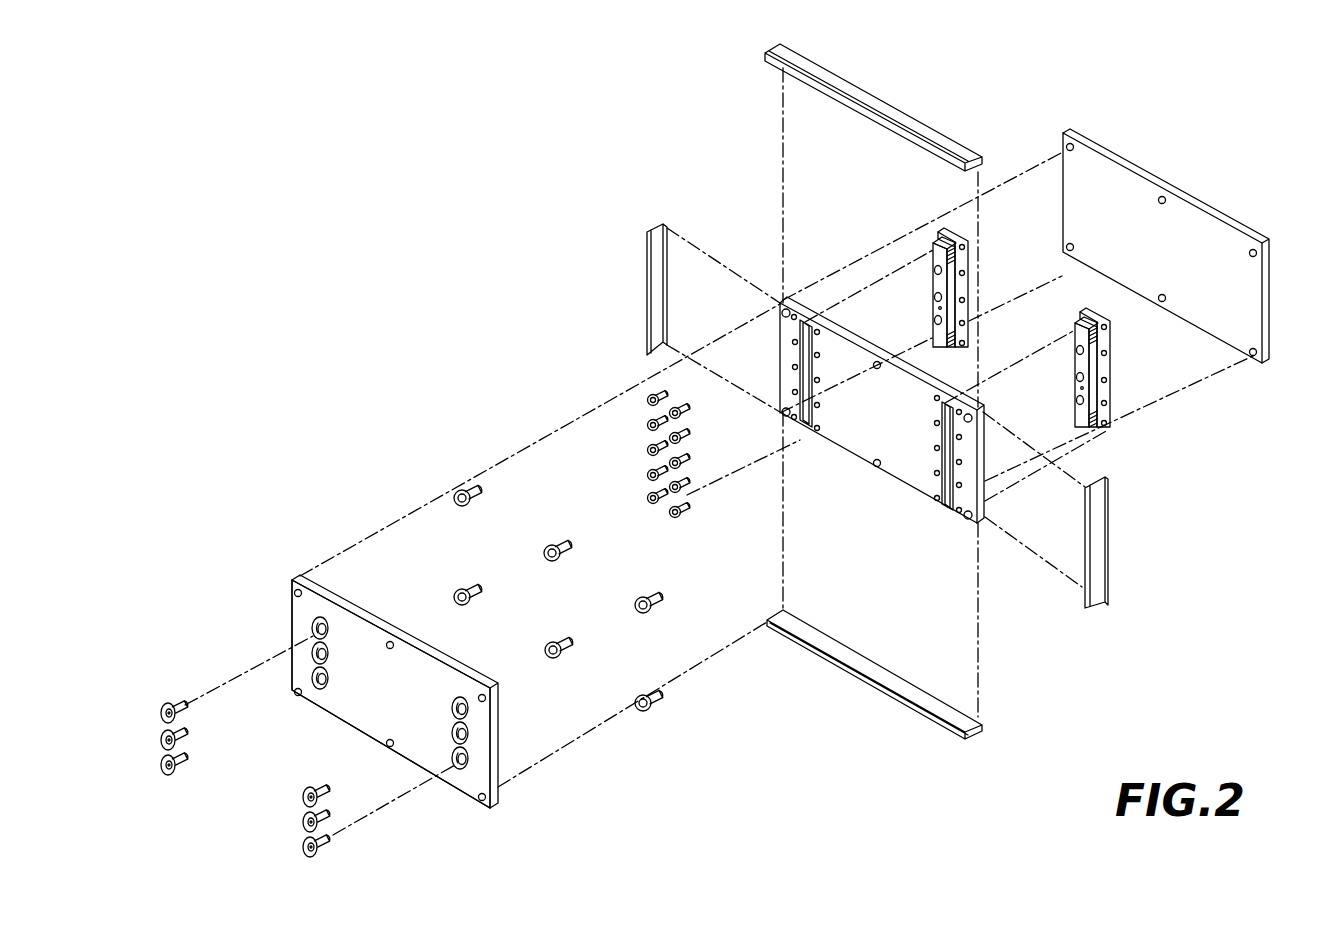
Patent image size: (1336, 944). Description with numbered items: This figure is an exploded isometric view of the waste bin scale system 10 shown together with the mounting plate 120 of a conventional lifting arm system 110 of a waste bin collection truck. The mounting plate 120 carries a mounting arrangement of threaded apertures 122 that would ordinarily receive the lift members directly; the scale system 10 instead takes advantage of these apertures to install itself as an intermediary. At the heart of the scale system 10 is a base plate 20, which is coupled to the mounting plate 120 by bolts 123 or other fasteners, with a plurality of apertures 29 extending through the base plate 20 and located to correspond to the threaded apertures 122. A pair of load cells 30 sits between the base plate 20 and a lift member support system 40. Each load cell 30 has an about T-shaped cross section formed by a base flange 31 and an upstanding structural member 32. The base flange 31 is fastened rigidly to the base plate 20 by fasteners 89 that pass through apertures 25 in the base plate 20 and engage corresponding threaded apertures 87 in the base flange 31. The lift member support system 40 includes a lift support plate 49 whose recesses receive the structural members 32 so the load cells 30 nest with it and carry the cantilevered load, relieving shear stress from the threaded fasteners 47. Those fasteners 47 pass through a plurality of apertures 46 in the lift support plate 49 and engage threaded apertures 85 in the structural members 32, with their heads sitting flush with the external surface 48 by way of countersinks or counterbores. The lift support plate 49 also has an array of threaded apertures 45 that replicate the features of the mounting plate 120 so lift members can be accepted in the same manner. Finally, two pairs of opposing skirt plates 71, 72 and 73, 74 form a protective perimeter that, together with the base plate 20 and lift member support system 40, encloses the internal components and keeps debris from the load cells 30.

The waste bin scale system 10 is at (361, 230).
The base plate 20 is at (854, 408).
The apertures 25 is at (792, 392).
The apertures 29 is at (783, 311).
The load cell 30 is at (1029, 331).
The base flange 31 is at (969, 260).
The structural member 32 is at (934, 280).
The lift member support system 40 is at (365, 688).
The threaded apertures 45 is at (295, 591).
The apertures 46 is at (312, 676).
The threaded fasteners 47 is at (302, 793).
The external surface 48 is at (400, 706).
The lift support plate 49 is at (358, 703).
The skirt plate 71 is at (1098, 528).
The skirt plate 72 is at (660, 295).
The skirt plate 73 is at (858, 110).
The skirt plate 74 is at (865, 667).
The threaded apertures 85 is at (935, 323).
The threaded apertures 87 is at (960, 303).
The fasteners 89 is at (647, 500).
The lifting arm system 110 is at (1199, 232).
The mounting plate 120 is at (1127, 187).
The threaded apertures 122 is at (1251, 350).
The bolts 123 is at (546, 546).